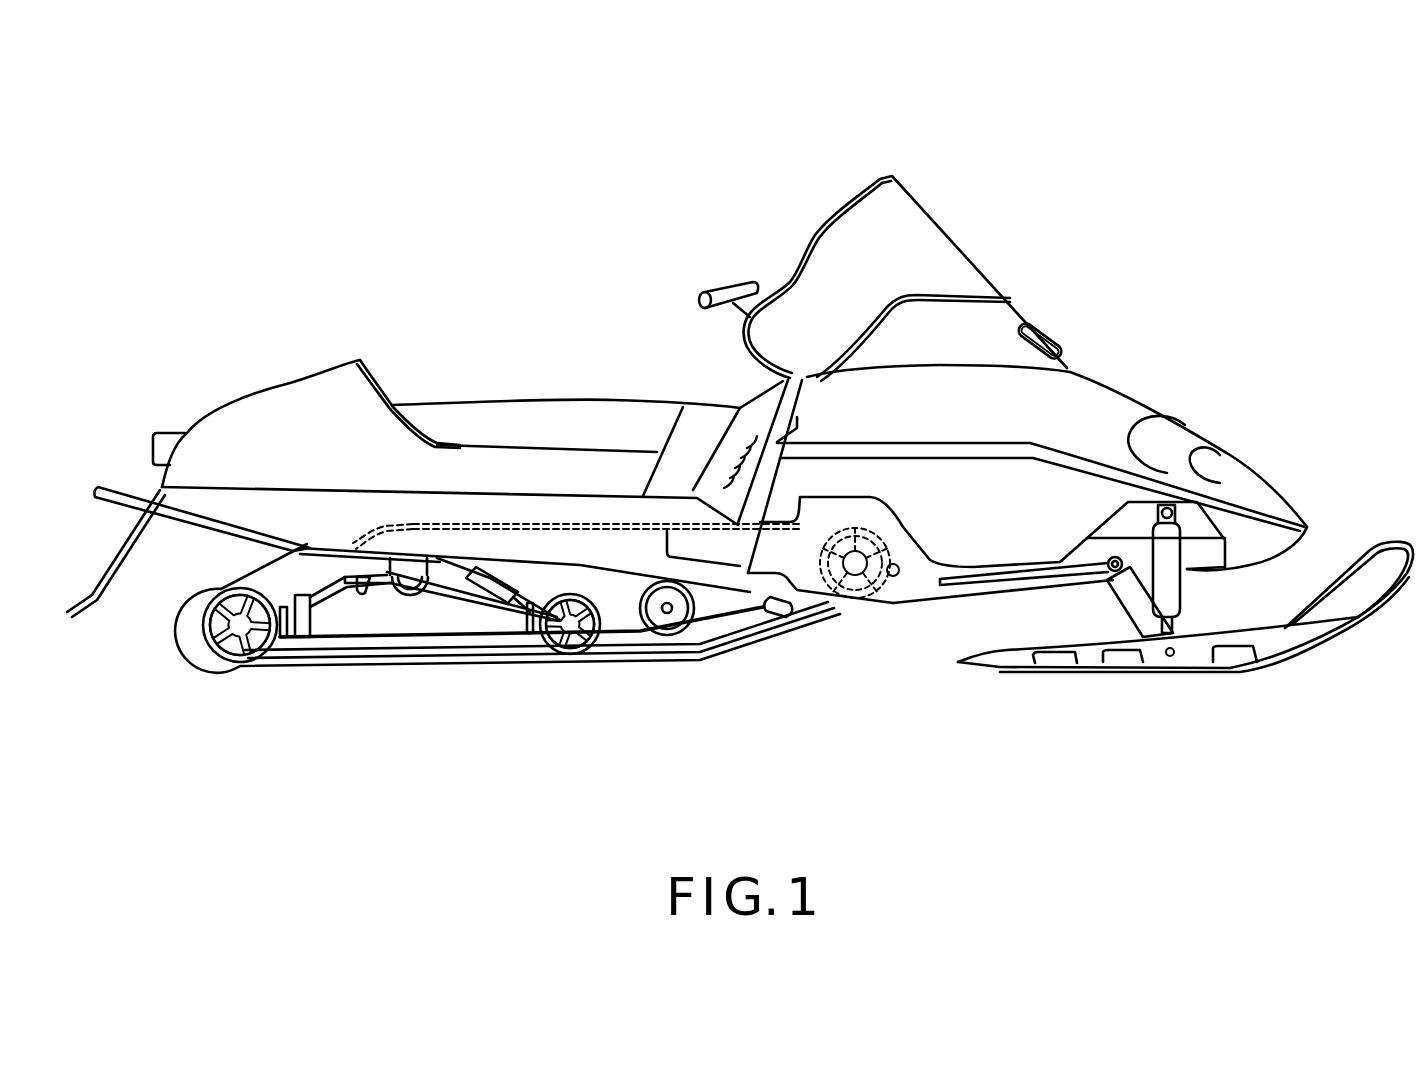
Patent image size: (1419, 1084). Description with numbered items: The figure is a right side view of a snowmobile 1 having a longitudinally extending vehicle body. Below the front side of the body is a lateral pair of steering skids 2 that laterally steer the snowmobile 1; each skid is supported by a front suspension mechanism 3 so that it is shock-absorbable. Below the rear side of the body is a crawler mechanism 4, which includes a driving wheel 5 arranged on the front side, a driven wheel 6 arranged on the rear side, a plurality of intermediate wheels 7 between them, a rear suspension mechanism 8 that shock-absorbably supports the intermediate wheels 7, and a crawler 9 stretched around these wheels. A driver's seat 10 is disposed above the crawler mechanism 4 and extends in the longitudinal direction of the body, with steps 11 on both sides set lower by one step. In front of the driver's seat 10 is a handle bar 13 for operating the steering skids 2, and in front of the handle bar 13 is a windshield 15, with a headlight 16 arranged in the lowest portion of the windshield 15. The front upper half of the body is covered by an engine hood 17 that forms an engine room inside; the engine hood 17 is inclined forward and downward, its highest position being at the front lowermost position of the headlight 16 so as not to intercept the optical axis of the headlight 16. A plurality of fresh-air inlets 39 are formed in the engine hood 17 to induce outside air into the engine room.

The snowmobile 1 is at (575, 182).
The steering skids 2 is at (1333, 642).
The front suspension mechanisms 3 is at (1180, 593).
The crawler mechanism 4 is at (507, 647).
The driving wheel 5 is at (889, 600).
The driven wheel 6 is at (221, 657).
The intermediate wheels 7 is at (575, 662).
The rear suspension mechanism 8 is at (511, 618).
The crawler 9 is at (437, 666).
The driver's seat 10 is at (537, 417).
The steps 11 is at (431, 490).
The handle bar 13 is at (733, 290).
The windshield 15 is at (945, 242).
The headlight 16 is at (1043, 333).
The engine hood 17 is at (1113, 394).
The fresh-air inlets 39 is at (1157, 423).